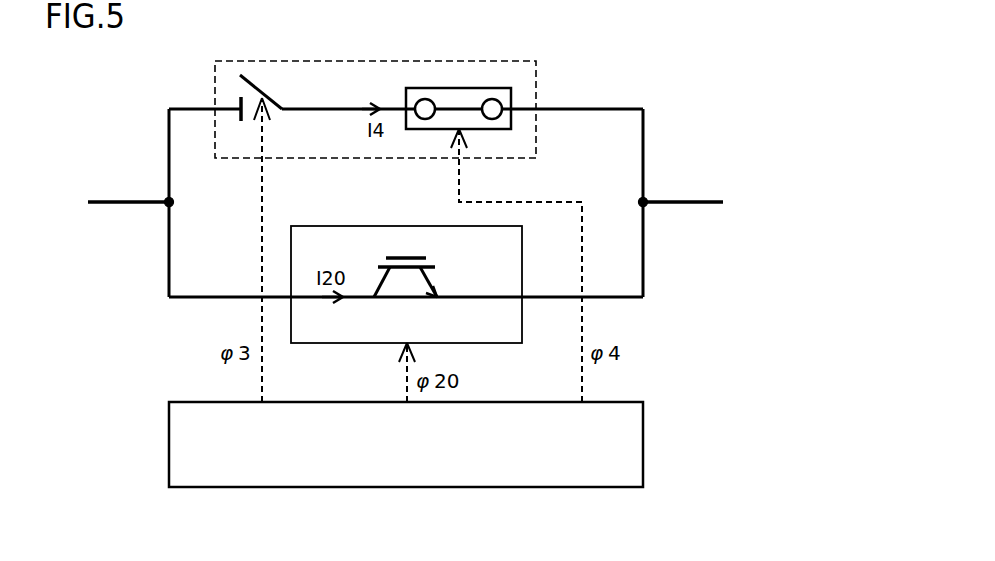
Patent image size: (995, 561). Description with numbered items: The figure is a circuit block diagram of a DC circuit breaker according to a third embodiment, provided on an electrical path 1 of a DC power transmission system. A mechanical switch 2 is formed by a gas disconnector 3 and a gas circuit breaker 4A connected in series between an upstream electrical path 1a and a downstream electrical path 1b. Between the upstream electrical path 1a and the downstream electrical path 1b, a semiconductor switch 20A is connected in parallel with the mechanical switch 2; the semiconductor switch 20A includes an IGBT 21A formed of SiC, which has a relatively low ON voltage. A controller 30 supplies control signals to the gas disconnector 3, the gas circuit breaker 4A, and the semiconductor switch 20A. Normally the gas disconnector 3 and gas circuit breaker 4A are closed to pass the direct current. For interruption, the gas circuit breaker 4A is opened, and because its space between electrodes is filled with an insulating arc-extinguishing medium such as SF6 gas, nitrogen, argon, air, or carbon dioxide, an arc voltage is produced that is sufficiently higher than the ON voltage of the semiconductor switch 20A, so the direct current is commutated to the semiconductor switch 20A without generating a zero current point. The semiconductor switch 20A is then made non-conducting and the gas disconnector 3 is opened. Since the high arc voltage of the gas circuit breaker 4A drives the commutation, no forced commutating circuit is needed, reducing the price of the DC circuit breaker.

The electrical path 1 is at (113, 201).
The upstream electrical path 1a is at (130, 204).
The downstream electrical path 1b is at (682, 204).
The mechanical switch 2 is at (232, 60).
The gas disconnector 3 is at (258, 84).
The gas circuit breaker 4A is at (460, 88).
The semiconductor switch 20A is at (360, 226).
The IGBT 21A is at (416, 258).
The controller 30 is at (169, 445).